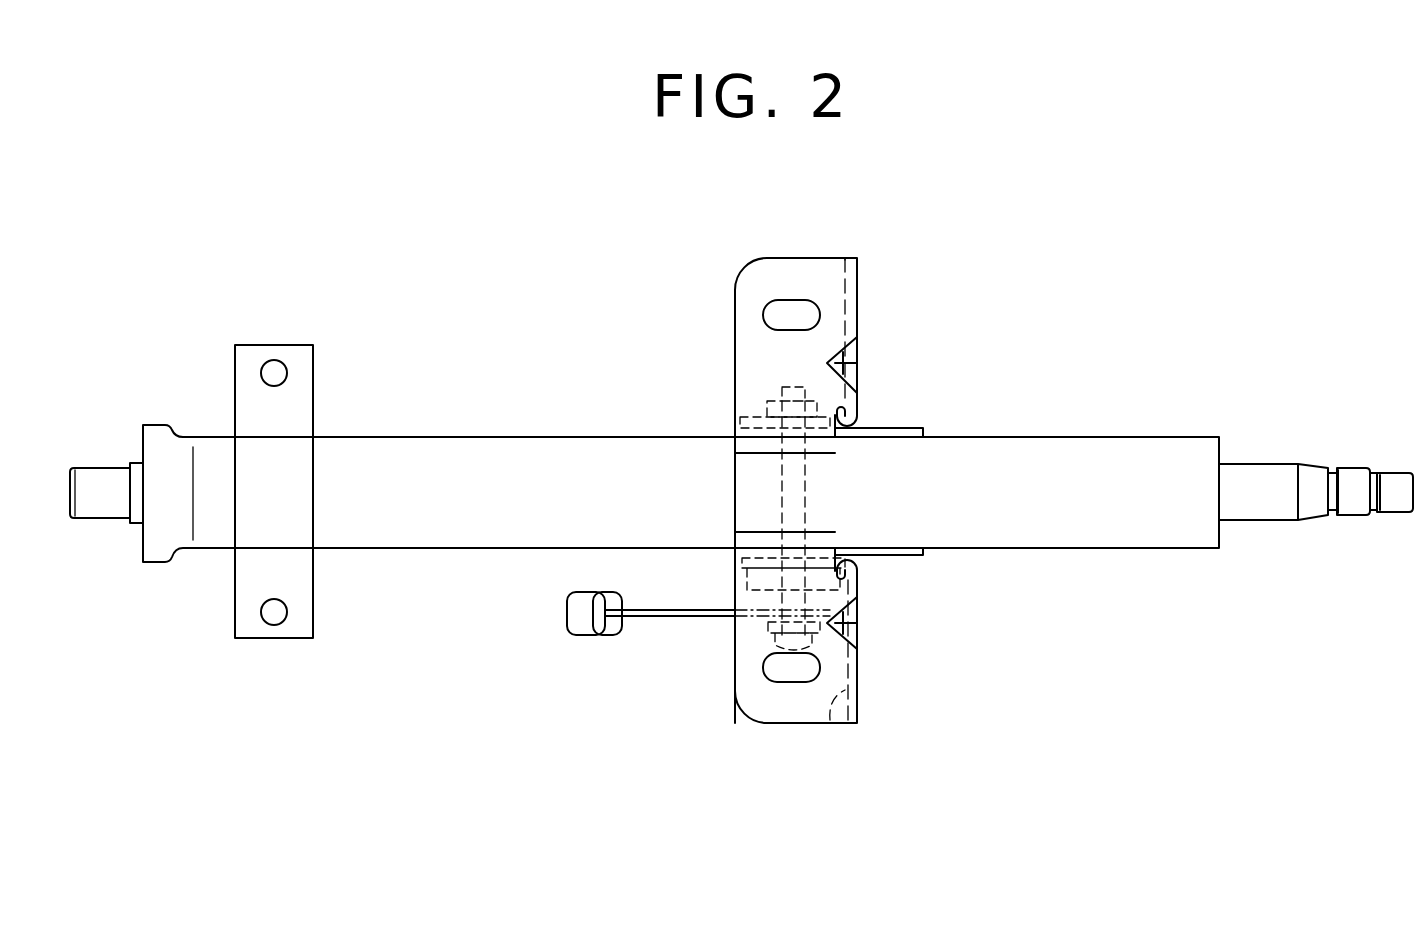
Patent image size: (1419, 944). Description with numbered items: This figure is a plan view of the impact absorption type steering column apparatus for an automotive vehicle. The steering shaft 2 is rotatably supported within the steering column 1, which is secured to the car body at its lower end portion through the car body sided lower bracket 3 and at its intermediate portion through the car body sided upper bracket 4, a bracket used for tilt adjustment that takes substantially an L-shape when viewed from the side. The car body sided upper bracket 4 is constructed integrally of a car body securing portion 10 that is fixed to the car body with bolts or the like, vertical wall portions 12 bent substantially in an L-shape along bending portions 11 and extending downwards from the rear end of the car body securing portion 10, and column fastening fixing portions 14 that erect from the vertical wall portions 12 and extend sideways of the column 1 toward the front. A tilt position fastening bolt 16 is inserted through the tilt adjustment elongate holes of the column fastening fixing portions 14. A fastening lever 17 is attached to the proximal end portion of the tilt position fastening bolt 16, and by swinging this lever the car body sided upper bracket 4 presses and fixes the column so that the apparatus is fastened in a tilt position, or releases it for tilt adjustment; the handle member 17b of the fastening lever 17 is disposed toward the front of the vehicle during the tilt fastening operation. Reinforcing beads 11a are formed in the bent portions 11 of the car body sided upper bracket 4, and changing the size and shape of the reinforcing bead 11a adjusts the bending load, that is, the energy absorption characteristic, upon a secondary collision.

The steering column 1 is at (1165, 437).
The steering shaft 2 is at (1280, 464).
The car body sided lower bracket 3 is at (313, 387).
The car body sided upper bracket 4 is at (946, 314).
The car body securing portion 10 is at (735, 318).
The bending portions 11 is at (857, 290).
The reinforcing beads 11a is at (857, 346).
The vertical wall portions 12 is at (830, 722).
The column fastening fixing portions 14 is at (735, 425).
The tilt position fastening bolt 16 is at (805, 487).
The fastening lever 17 is at (685, 620).
The handle member 17b is at (600, 638).